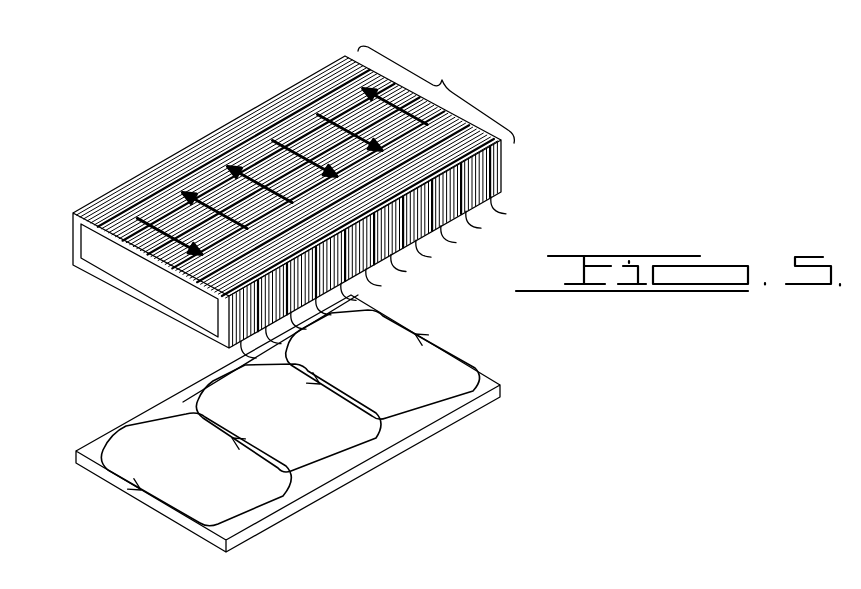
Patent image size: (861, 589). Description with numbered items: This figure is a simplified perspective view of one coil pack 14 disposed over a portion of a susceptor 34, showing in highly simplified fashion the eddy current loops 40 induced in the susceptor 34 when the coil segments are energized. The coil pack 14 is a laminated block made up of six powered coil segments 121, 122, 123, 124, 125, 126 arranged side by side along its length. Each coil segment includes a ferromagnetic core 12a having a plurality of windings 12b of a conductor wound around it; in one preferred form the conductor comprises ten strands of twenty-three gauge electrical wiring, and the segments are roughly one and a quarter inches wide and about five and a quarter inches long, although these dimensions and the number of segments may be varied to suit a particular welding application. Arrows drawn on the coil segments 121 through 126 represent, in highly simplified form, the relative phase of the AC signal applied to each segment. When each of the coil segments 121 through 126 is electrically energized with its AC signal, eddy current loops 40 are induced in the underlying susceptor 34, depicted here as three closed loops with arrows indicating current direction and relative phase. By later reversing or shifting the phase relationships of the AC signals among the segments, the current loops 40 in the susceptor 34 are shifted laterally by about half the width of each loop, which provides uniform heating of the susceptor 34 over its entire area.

The ferromagnetic core 12a is at (112, 257).
The windings 12b is at (226, 341).
The first coil segment 121 is at (85, 194).
The second coil segment 122 is at (137, 163).
The third coil segment 123 is at (185, 135).
The fourth coil segment 124 is at (230, 110).
The fifth coil segment 125 is at (280, 81).
The sixth coil segment 126 is at (322, 57).
The coil pack 14 is at (436, 91).
The susceptor 34 is at (478, 369).
The eddy current loops 40 is at (442, 388).